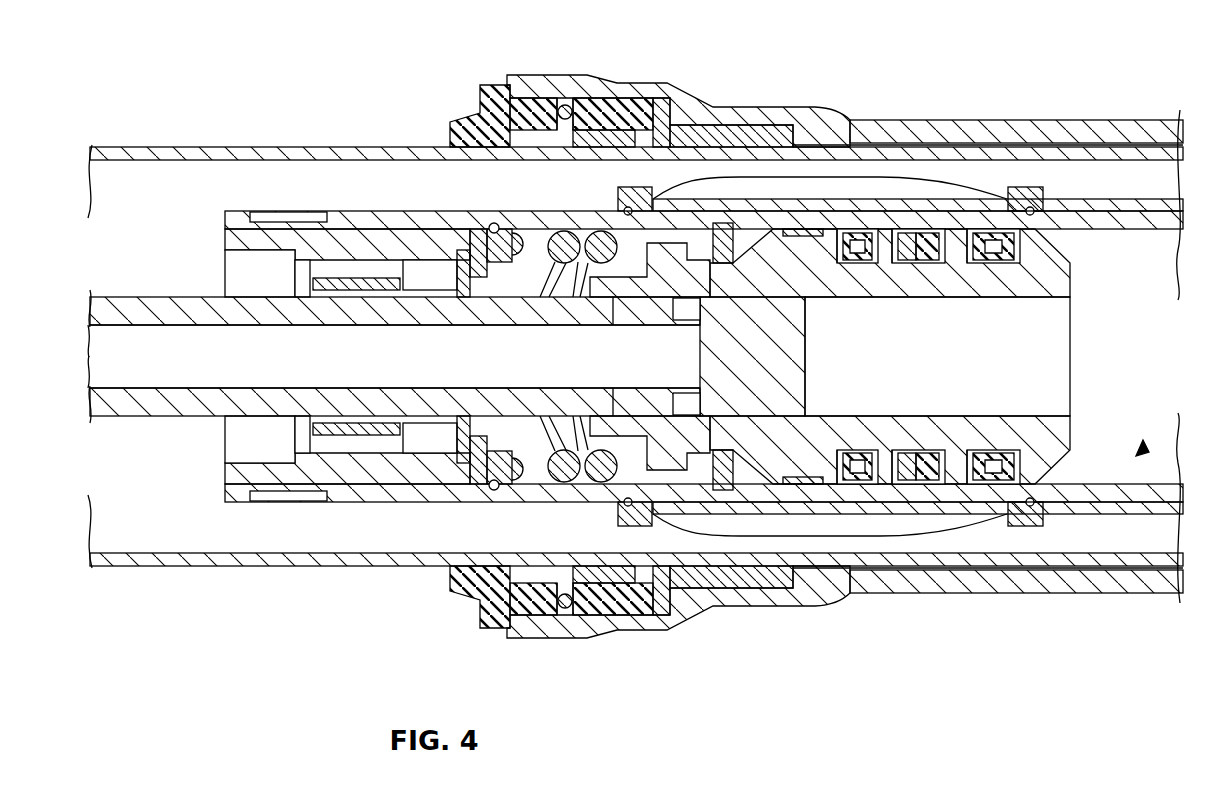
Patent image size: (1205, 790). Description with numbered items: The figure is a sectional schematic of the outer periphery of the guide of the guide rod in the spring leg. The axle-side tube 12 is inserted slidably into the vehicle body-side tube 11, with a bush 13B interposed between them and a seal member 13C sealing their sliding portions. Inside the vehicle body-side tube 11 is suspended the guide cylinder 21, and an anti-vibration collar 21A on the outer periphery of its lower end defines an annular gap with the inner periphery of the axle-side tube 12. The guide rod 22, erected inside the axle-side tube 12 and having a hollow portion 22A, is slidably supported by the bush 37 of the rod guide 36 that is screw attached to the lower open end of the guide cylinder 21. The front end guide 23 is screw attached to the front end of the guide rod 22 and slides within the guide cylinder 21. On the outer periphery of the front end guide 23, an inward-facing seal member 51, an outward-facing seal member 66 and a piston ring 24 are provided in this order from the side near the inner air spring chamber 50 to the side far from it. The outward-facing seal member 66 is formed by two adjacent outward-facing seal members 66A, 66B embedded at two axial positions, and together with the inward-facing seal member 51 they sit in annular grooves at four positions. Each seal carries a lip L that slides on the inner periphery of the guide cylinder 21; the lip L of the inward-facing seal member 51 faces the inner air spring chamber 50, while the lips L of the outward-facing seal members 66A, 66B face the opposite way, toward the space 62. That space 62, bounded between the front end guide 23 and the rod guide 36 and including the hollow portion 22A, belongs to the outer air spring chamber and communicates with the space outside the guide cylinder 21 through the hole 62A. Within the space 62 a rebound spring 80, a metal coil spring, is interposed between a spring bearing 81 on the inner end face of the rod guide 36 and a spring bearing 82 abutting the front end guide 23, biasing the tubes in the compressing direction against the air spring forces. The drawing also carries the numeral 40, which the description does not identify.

The vehicle body-side tube 11 is at (1040, 120).
The axle-side tube 12 is at (214, 146).
The bush 13B is at (743, 130).
The seal member 13C is at (617, 120).
The guide cylinder 21 is at (1143, 207).
The anti-vibration collar 21A is at (880, 207).
The guide rod 22 is at (157, 296).
The hollow portion 22A is at (160, 367).
The front end guide 23 is at (1047, 440).
The piston ring 24 is at (812, 486).
The rod guide 36 is at (243, 486).
The bush 37 is at (357, 423).
The flow passage 40 is at (1143, 443).
The inner air spring chamber 50 is at (1110, 450).
The inward-facing seal member 51 is at (995, 490).
The space 62 is at (528, 253).
The hole 62A is at (537, 217).
The outward-facing seal member 66 is at (942, 488).
The outward-facing seal member 66A is at (922, 490).
The outward-facing seal member 66B is at (873, 490).
The rebound spring 80 is at (580, 467).
The spring bearing 81 is at (473, 490).
The spring bearing 82 is at (668, 463).
The lip L is at (1003, 229).